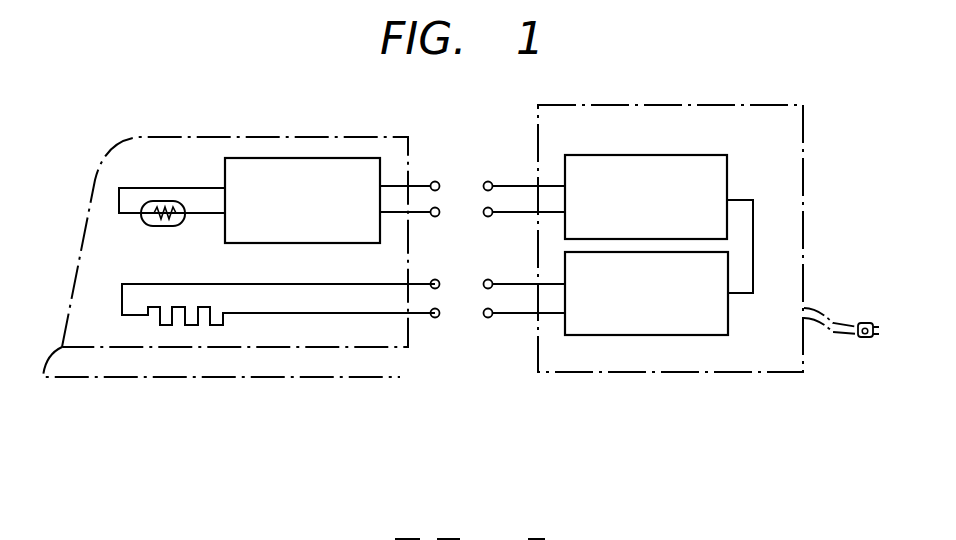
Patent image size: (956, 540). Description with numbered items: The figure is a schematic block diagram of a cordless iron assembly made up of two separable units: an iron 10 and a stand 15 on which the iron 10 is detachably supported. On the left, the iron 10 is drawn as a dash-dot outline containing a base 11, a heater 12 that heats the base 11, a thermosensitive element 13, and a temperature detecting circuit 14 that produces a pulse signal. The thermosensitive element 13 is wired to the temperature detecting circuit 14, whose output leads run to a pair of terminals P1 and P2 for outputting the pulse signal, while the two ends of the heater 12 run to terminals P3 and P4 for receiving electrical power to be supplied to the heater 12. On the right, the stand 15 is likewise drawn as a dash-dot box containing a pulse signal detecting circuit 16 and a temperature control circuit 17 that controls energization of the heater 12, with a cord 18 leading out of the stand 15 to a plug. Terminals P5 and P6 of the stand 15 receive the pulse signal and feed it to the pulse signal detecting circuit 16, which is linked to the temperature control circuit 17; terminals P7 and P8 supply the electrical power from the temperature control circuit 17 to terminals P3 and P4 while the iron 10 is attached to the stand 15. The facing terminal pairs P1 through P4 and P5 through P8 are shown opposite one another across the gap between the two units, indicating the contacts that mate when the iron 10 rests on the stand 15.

The iron 10 is at (211, 137).
The base 11 is at (128, 365).
The heater 12 is at (189, 296).
The thermosensitive element 13 is at (147, 227).
The temperature detecting circuit 14 is at (334, 158).
The stand 15 is at (702, 105).
The pulse signal detecting circuit 16 is at (728, 167).
The temperature control circuit 17 is at (728, 326).
The cord 18 is at (832, 320).
The terminal P1 is at (435, 181).
The terminal P2 is at (435, 217).
The terminal P3 is at (437, 289).
The terminal P4 is at (433, 318).
The terminal P5 is at (487, 181).
The terminal P6 is at (488, 217).
The terminal P7 is at (485, 289).
The terminal P8 is at (490, 318).